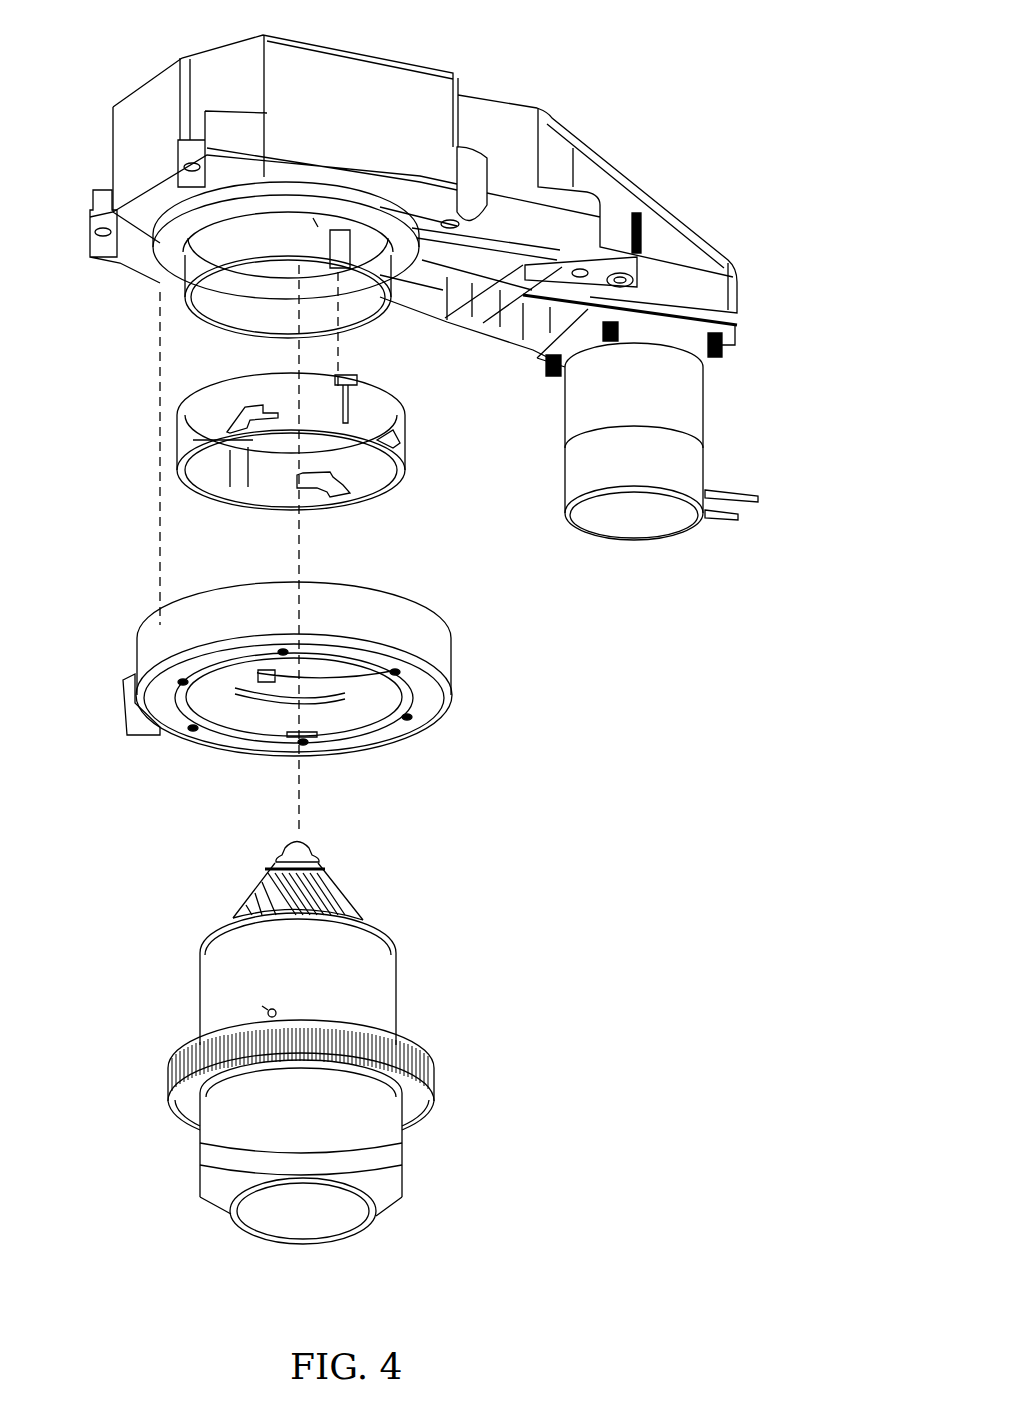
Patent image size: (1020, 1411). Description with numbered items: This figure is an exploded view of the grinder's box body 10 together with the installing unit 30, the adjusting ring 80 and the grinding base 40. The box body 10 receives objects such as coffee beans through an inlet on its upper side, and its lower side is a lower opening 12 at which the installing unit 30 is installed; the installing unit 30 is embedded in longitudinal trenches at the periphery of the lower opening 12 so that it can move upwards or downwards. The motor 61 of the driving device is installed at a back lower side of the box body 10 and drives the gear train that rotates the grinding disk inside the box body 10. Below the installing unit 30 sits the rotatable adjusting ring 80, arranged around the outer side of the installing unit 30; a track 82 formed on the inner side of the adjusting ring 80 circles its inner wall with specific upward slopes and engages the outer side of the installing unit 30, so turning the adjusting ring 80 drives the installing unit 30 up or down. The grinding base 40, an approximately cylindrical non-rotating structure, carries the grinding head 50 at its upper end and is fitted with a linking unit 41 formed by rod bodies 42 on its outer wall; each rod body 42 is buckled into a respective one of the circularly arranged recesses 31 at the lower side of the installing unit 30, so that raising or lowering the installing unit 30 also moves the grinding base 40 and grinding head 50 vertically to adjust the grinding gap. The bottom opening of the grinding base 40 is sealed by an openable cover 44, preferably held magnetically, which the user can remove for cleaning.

The box body 10 is at (490, 96).
The lower opening 12 is at (356, 318).
The installing unit 30 is at (403, 470).
The recesses 31 is at (341, 500).
The adjusting ring 80 is at (452, 670).
The track 82 is at (337, 700).
The grinding head 50 is at (353, 878).
The grinding base 40 is at (405, 971).
The linking unit 41 is at (261, 1008).
The rod bodies 42 is at (266, 1012).
The cover 44 is at (400, 1148).
The motor 61 is at (704, 425).